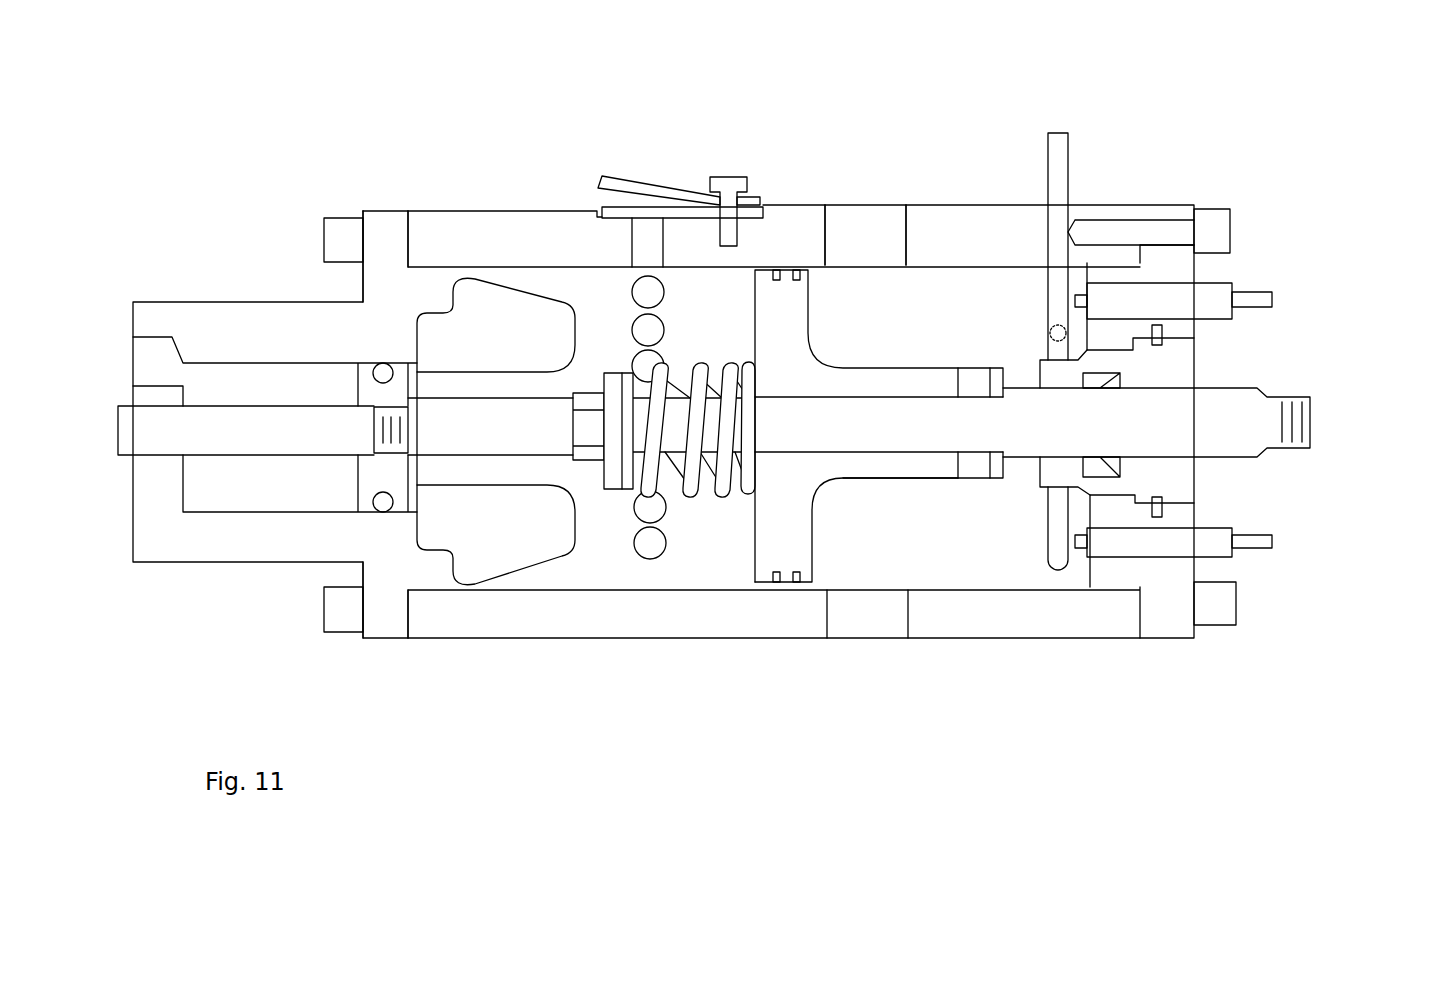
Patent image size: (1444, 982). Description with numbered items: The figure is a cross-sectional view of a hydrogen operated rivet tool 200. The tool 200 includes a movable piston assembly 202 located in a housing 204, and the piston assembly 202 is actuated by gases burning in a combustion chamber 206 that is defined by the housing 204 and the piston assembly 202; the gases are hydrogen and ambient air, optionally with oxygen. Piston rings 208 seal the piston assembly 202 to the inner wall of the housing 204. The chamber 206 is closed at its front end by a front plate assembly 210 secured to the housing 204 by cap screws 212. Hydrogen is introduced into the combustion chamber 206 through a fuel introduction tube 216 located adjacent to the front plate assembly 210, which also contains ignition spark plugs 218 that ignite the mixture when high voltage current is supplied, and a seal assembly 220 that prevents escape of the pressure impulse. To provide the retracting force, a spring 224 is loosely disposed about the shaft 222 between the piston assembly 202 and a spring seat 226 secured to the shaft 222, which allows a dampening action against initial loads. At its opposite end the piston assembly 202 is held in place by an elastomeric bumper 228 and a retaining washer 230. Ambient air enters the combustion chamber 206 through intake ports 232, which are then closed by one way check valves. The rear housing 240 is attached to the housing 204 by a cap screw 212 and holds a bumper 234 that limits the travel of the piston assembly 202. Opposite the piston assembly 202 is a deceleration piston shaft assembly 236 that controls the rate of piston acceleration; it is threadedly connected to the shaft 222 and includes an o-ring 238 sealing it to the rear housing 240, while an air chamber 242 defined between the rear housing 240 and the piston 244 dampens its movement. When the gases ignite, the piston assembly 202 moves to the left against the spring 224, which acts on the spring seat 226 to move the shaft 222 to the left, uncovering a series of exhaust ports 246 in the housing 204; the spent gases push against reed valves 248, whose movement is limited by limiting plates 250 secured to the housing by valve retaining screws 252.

The tool 200 is at (708, 640).
The piston assembly 202 is at (840, 480).
The housing 204 is at (458, 227).
The combustion chamber 206 is at (920, 280).
The piston rings 208 is at (793, 270).
The front plate assembly 210 is at (1183, 637).
The cap screws 212 is at (323, 218).
The fuel introduction tube 216 is at (1068, 152).
The ignition spark plugs 218 is at (1218, 282).
The seal assembly 220 is at (1147, 485).
The shaft 222 is at (1238, 387).
The spring 224 is at (705, 500).
The spring seat 226 is at (608, 495).
The elastomeric bumper 228 is at (980, 367).
The retaining washer 230 is at (1010, 480).
The intake ports 232 is at (885, 218).
The bumper 234 is at (517, 577).
The deceleration piston shaft assembly 236 is at (110, 440).
The o-ring 238 is at (378, 364).
The rear housing 240 is at (380, 212).
The air chamber 242 is at (275, 371).
The piston 244 is at (370, 473).
The exhaust ports 246 is at (632, 250).
The reed valves 248 is at (677, 196).
The limiting plates 250 is at (605, 174).
The valve retaining screws 252 is at (737, 177).